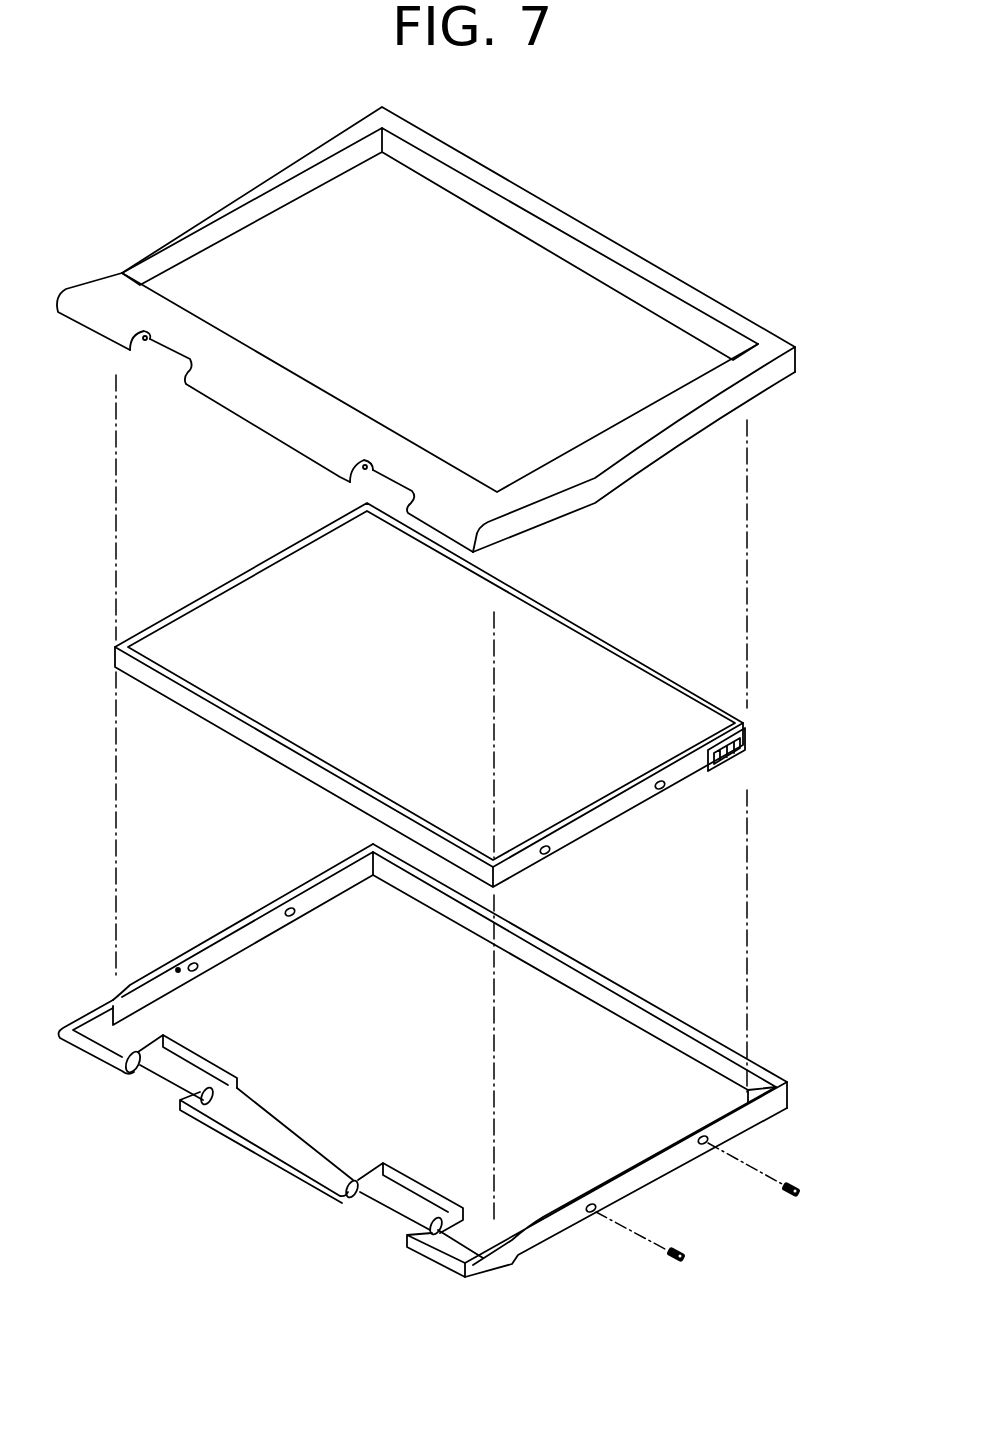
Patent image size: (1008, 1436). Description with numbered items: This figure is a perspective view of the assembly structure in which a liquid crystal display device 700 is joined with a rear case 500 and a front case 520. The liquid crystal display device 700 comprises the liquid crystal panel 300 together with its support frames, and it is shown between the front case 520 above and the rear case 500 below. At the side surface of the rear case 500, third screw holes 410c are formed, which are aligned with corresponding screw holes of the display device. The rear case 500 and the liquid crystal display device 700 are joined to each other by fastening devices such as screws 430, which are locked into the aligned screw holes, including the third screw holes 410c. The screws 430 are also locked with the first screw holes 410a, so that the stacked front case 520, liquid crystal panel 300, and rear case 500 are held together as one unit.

The front case 520 is at (628, 252).
The liquid crystal panel 300 is at (506, 725).
The liquid crystal display device 700 is at (747, 738).
The first screw holes 410a is at (665, 789).
The rear case 500 is at (483, 1076).
The third screw holes 410c is at (592, 1213).
The screws 430 is at (684, 1258).